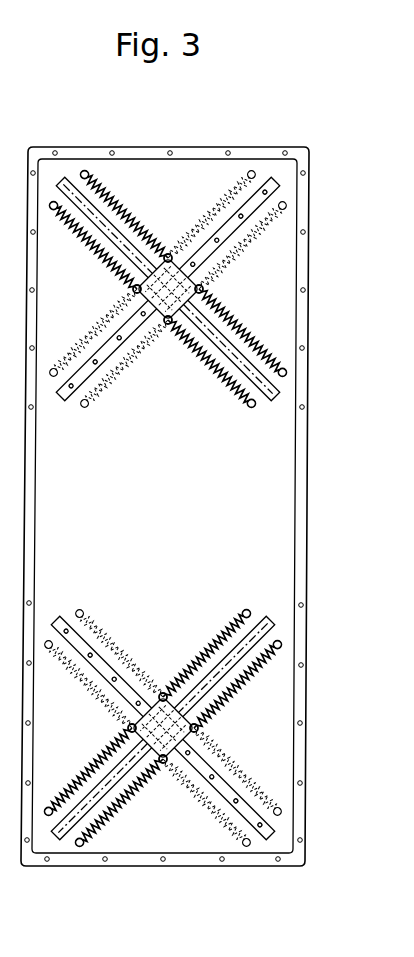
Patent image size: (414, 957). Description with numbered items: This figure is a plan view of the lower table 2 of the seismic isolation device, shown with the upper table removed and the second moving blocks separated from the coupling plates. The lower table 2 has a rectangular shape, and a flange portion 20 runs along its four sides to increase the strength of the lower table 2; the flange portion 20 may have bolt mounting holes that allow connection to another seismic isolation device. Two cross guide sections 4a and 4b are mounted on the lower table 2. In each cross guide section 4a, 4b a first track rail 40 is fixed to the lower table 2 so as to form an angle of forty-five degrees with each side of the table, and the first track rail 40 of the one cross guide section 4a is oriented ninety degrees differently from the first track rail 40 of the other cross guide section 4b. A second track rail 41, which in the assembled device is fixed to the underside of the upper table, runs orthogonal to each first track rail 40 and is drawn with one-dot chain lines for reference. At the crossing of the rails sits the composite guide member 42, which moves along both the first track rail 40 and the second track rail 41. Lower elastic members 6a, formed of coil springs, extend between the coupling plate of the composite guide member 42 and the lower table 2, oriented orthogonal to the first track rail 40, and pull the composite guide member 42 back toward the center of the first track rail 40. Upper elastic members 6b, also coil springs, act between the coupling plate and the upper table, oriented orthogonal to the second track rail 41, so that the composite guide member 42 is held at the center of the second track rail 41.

The lower table 2 is at (314, 207).
The flange portion 20 is at (298, 470).
The cross guide section 4a is at (272, 290).
The cross guide section 4b is at (268, 722).
The lower elastic member 6a is at (112, 258).
The upper elastic member 6b is at (237, 199).
The first track rail 40 is at (273, 184).
The second track rail 41 is at (276, 389).
The composite guide member 42 is at (117, 291).